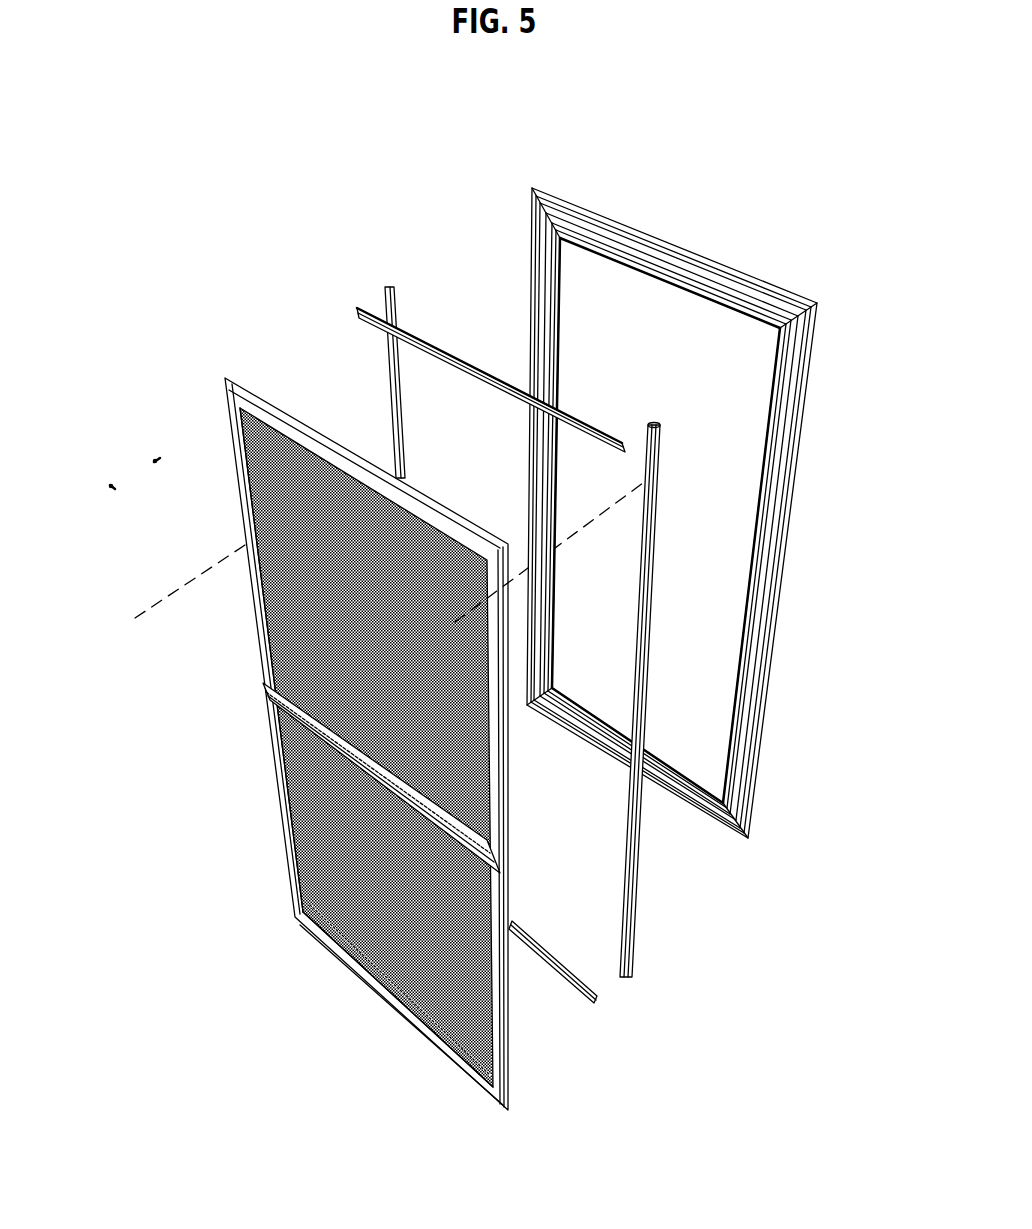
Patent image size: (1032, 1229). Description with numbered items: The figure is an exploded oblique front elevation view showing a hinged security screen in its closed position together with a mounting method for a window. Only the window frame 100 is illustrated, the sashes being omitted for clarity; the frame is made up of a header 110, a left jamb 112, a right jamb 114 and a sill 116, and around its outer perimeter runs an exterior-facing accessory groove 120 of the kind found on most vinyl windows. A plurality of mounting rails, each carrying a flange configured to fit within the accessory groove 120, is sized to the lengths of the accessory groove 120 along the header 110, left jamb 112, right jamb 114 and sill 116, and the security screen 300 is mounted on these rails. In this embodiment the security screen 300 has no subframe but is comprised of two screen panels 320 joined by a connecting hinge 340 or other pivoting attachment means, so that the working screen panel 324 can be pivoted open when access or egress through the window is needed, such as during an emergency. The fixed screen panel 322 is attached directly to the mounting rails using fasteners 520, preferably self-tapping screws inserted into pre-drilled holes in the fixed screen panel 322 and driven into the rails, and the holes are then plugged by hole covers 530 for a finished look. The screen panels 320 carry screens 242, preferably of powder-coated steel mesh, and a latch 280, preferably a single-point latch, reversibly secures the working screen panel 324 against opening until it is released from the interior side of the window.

The window frame 100 is at (818, 328).
The header 110 is at (688, 258).
The left jamb 112 is at (557, 364).
The right jamb 114 is at (782, 587).
The sill 116 is at (658, 757).
The accessory groove 120 is at (530, 225).
The screen 242 is at (475, 758).
The latch 280 is at (397, 995).
The security screen 300 is at (222, 376).
The screen panels 320 is at (321, 745).
The fixed screen panel 322 is at (263, 668).
The working screen panel 324 is at (285, 857).
The connecting hinge 340 is at (503, 873).
The fasteners 520 is at (160, 425).
The hole covers 530 is at (117, 467).